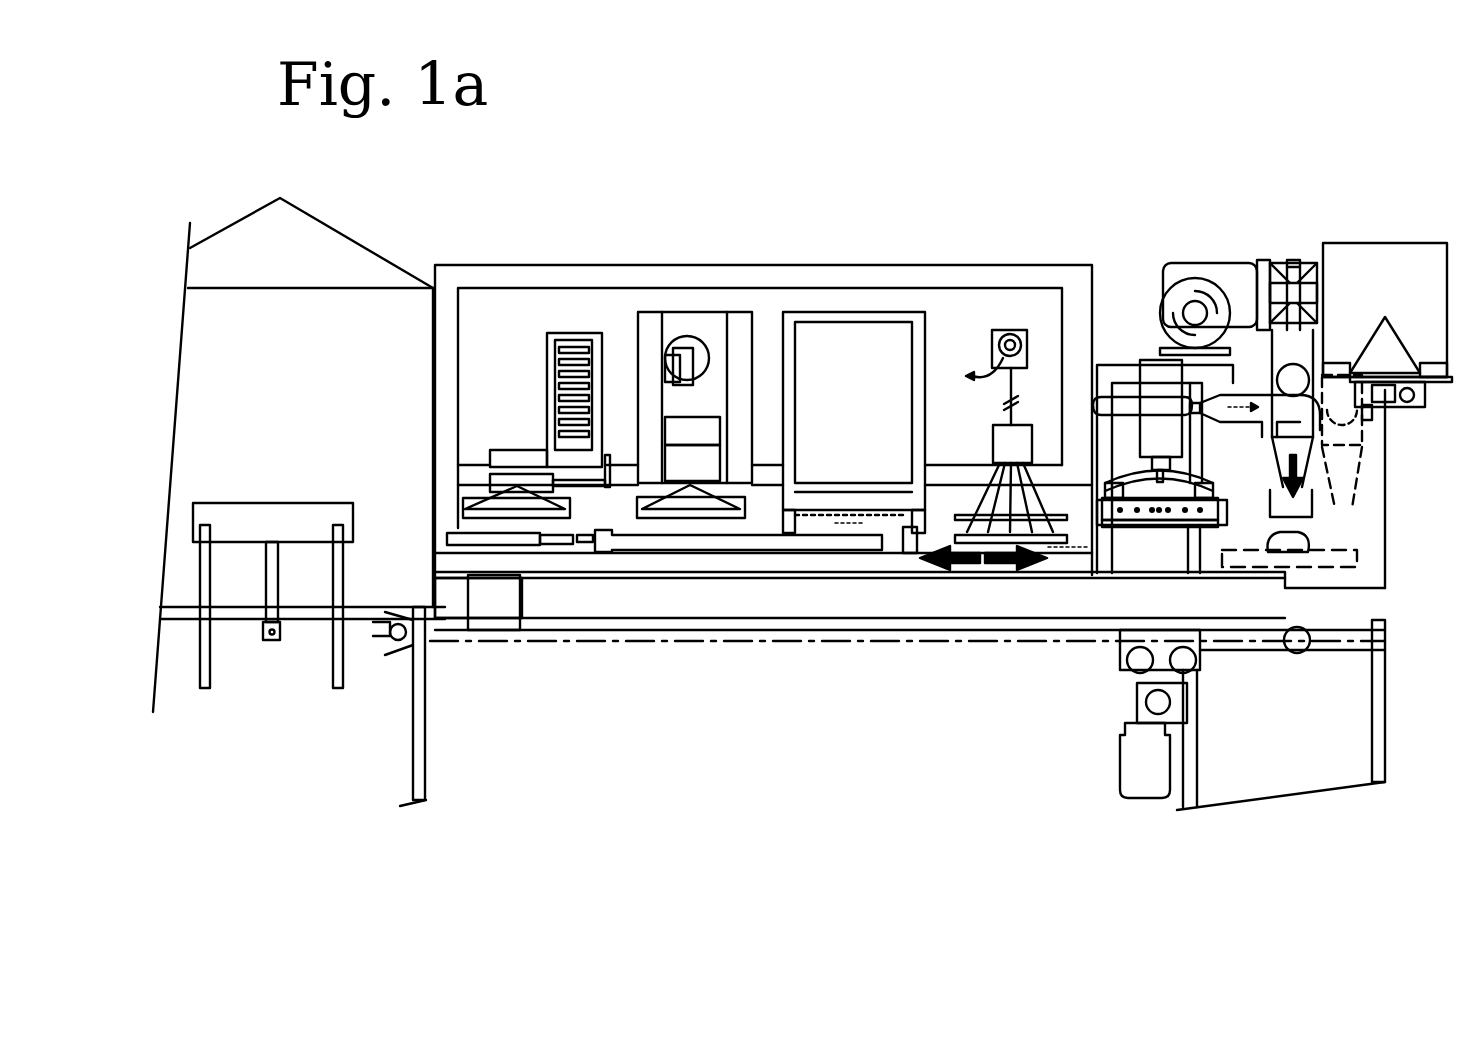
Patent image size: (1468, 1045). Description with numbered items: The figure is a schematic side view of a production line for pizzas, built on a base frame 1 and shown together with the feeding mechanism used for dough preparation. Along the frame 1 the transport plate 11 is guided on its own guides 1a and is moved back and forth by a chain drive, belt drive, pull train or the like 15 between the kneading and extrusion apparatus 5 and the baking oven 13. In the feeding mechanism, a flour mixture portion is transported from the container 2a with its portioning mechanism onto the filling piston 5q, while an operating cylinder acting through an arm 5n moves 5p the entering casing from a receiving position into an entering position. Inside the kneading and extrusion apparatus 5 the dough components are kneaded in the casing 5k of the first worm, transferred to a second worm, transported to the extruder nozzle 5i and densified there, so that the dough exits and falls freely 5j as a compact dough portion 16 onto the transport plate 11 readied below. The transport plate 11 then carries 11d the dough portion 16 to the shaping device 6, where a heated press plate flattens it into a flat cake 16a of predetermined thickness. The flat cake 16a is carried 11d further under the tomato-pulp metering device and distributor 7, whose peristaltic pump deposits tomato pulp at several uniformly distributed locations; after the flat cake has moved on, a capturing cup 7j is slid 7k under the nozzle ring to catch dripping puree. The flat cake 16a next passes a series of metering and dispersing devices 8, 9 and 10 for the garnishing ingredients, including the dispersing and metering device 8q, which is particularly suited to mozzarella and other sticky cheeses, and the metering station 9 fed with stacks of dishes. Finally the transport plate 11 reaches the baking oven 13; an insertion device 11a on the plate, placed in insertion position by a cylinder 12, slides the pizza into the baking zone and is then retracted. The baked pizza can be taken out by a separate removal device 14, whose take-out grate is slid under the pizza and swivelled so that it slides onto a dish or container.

The base frame 1 is at (412, 733).
The guides 1a is at (883, 600).
The container 2a is at (1354, 243).
The kneading and extrusion apparatus 5 is at (1311, 330).
The extruder nozzle 5i is at (1337, 496).
The free falling down 5j is at (1322, 464).
The casing 5k is at (1293, 365).
The arm 5n is at (1264, 393).
The movement of the casing 5p is at (1242, 387).
The filling piston 5q is at (1427, 377).
The shaping device 6 is at (1132, 362).
The tomato-pulp metering device and distributor 7 is at (1000, 330).
The capturing cup 7j is at (947, 348).
The sliding of the capturing cup 7k is at (1075, 547).
The metering device 8 is at (693, 312).
The dispersing and metering device 8q is at (813, 312).
The metering station 9 is at (570, 333).
The dispersing device 10 is at (693, 510).
The transport plate 11 is at (528, 553).
The insertion device 11a is at (611, 639).
The transport motion 11d is at (965, 566).
The cylinder 12 is at (823, 553).
The baking oven 13 is at (353, 252).
The removal device 14 is at (273, 623).
The chain drive, belt drive, pull train or the like 15 is at (1073, 650).
The dough portion 16 is at (1320, 540).
The flat cake 16a is at (567, 639).